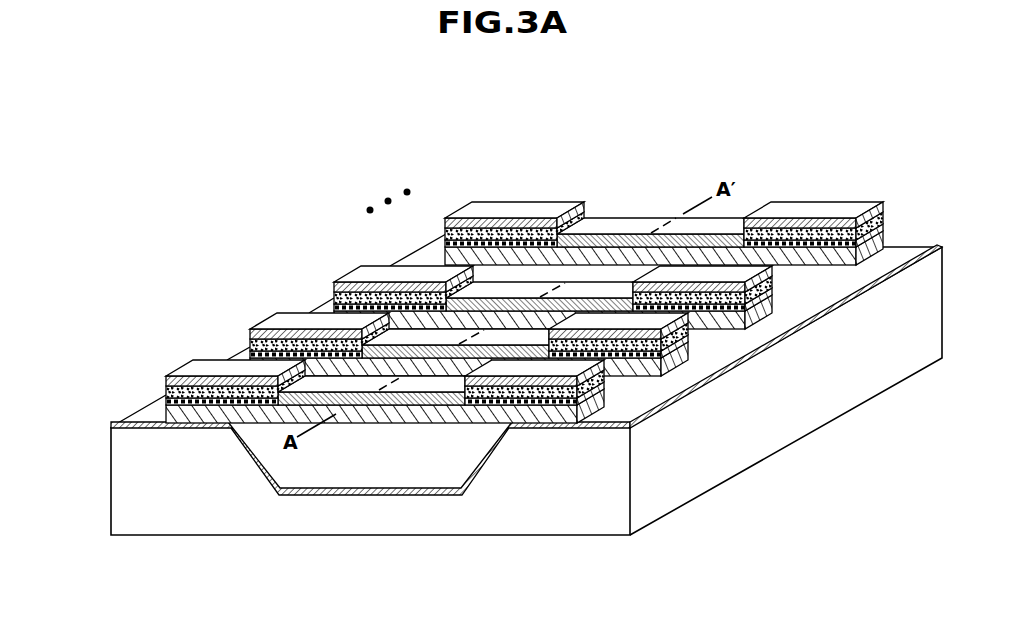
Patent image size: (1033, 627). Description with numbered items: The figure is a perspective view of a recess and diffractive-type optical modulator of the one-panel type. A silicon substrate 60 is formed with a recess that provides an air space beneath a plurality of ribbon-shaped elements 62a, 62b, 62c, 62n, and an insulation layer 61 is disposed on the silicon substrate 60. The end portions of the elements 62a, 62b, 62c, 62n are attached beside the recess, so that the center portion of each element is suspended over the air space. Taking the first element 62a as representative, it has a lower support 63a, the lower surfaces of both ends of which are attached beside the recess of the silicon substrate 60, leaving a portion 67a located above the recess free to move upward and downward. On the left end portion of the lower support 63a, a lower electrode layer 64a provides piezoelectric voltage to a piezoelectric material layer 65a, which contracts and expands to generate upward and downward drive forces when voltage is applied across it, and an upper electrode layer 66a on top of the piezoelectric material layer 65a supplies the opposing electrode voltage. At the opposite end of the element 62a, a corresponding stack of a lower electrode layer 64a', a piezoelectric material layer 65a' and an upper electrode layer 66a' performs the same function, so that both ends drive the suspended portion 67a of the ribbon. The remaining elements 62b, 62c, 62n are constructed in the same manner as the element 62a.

The silicon substrate 60 is at (110, 484).
The insulation layer 61 is at (110, 427).
The element 62a is at (416, 424).
The element 62b is at (260, 325).
The element 62c is at (347, 278).
The element 62n is at (462, 218).
The lower support 63a is at (166, 414).
The lower electrode layer 64a is at (182, 390).
The piezoelectric material layer 65a is at (195, 377).
The upper electrode layer 66a is at (195, 361).
The movable portion of the lower support 67a is at (262, 355).
The lower electrode layer 64a' is at (610, 459).
The piezoelectric material layer 65a' is at (624, 443).
The upper electrode layer 66a' is at (636, 427).